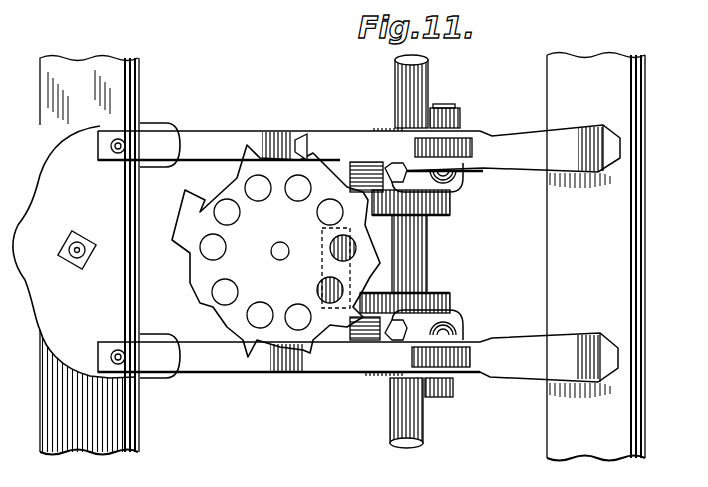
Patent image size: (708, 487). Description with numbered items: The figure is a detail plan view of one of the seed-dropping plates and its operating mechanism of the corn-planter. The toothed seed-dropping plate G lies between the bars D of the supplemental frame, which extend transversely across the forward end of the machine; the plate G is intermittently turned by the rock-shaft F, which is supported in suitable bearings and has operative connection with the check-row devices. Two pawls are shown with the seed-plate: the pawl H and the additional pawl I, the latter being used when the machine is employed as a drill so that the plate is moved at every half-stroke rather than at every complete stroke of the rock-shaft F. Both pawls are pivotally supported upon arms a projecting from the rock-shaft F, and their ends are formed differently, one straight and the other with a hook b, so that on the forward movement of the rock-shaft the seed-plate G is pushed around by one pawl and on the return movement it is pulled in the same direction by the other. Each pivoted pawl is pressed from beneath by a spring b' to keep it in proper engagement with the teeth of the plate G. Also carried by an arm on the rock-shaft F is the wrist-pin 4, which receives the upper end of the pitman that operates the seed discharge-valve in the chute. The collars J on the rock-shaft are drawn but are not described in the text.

The bars of the supplemental frame D is at (354, 257).
The rock-shaft F is at (430, 85).
The pawl H is at (359, 148).
The additional pawl I is at (358, 357).
The collars J is at (445, 213).
The seed-dropping plate G is at (276, 251).
The arm a is at (465, 157).
The hook b is at (292, 236).
The spring b' is at (182, 261).
The wrist-pin 4 is at (337, 256).